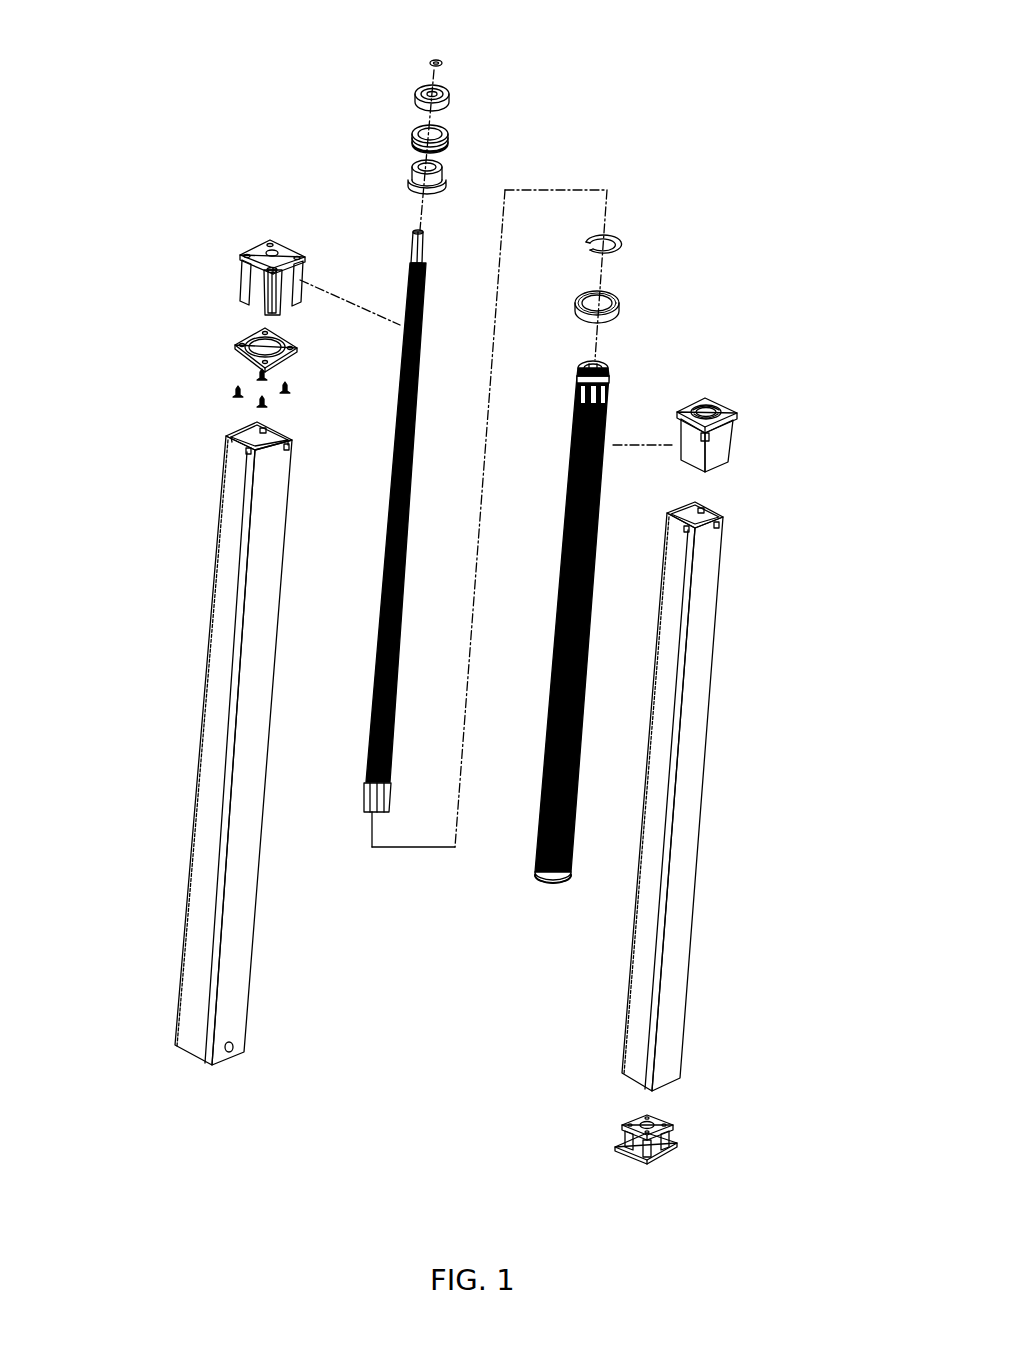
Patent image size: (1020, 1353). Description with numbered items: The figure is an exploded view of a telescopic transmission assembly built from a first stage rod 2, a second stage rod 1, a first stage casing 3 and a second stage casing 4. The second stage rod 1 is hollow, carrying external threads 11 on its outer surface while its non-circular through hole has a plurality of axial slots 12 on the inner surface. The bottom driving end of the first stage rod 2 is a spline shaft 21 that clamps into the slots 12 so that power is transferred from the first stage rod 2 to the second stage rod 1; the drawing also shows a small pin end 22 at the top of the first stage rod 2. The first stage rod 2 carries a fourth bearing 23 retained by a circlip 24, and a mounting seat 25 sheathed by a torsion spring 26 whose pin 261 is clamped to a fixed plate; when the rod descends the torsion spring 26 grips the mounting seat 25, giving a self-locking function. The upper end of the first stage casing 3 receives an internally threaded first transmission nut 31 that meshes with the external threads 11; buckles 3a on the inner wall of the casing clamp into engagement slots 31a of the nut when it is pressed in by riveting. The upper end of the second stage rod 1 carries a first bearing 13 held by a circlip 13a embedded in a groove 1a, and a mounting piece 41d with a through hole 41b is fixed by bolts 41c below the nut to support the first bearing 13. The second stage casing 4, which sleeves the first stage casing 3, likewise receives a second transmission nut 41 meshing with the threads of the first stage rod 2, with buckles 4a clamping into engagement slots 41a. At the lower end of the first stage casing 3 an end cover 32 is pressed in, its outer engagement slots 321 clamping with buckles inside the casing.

The second stage rod 1 is at (612, 403).
The groove 1a is at (577, 368).
The external threads 11 is at (607, 418).
The slots 12 is at (597, 365).
The first bearing 13 is at (608, 293).
The circlip 13a is at (613, 235).
The first stage rod 2 is at (388, 540).
The spline shaft 21 is at (375, 812).
The upper pin end of screw 22 is at (417, 238).
The fourth bearing 23 is at (417, 93).
The circlip 24 is at (433, 63).
The mounting seat 25 is at (412, 170).
The torsion spring 26 is at (412, 132).
The pin 261 is at (447, 137).
The first stage casing 3 is at (703, 797).
The buckles 3a is at (700, 503).
The first transmission nut 31 is at (732, 442).
The engagement slots 31a is at (703, 433).
The end cover 32 is at (675, 1148).
The engagement slots 321 is at (647, 1148).
The second stage casing 4 is at (200, 740).
The buckles 4a is at (247, 422).
The second transmission nut 41 is at (242, 287).
The engagement slots 41a is at (273, 287).
The through hole 41b is at (258, 347).
The bolts 41c is at (235, 398).
The mounting piece 41d is at (263, 347).